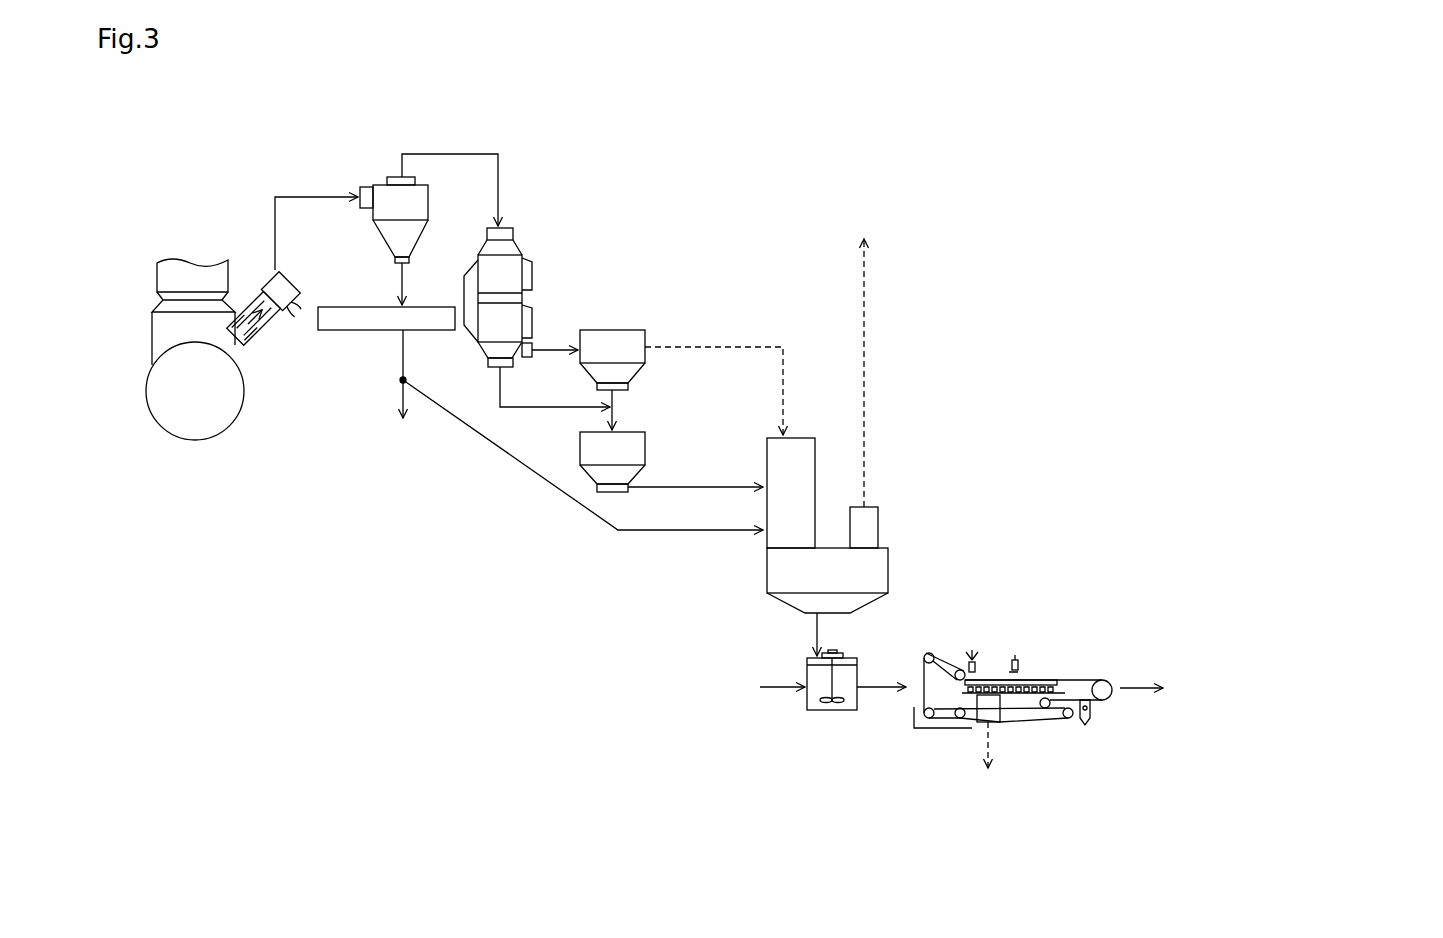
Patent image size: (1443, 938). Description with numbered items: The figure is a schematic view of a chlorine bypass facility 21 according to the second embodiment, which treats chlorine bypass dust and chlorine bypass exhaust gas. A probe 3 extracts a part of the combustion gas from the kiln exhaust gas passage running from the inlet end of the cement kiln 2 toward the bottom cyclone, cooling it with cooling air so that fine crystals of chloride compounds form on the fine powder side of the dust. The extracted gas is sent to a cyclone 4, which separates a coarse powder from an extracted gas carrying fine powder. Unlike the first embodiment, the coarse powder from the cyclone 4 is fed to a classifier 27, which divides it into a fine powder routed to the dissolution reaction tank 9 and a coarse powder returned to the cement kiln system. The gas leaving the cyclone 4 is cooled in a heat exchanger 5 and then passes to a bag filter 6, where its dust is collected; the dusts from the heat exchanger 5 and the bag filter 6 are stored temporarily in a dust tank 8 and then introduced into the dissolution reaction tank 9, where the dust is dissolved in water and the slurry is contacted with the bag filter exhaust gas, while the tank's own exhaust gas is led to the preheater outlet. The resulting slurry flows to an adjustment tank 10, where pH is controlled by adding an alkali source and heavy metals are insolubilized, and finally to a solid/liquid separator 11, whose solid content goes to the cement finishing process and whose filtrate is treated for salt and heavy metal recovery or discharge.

The chlorine bypass facility 21 is at (613, 109).
The cement kiln 2 is at (148, 393).
The probe 3 is at (262, 346).
The cyclone 4 is at (383, 237).
The heat exchanger 5 is at (522, 250).
The bag filter 6 is at (632, 330).
The dust tank 8 is at (645, 448).
The dissolution reaction tank 9 is at (888, 568).
The adjustment tank 10 is at (807, 700).
The solid/liquid separator 11 is at (1068, 680).
The classifier 27 is at (370, 331).